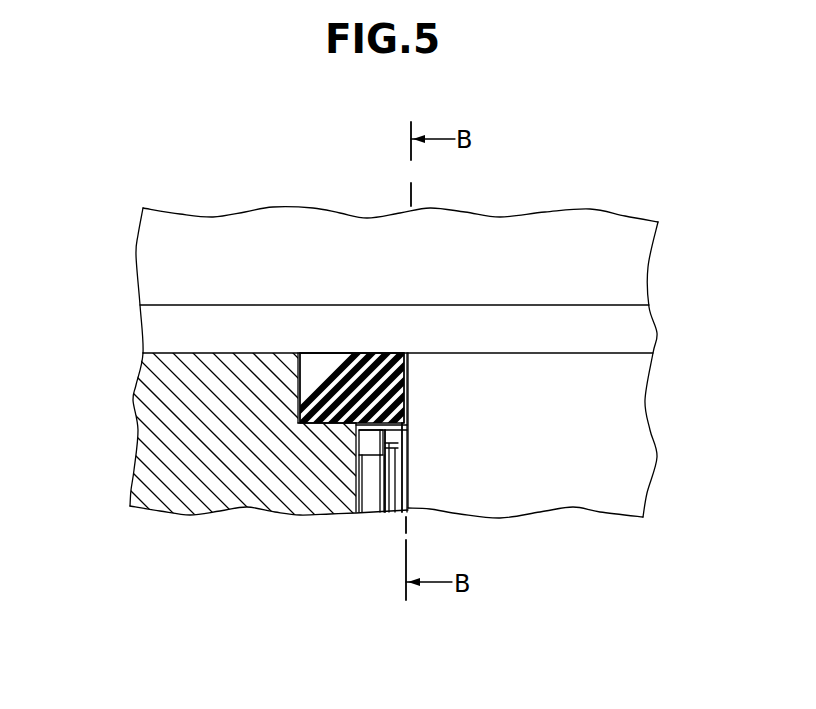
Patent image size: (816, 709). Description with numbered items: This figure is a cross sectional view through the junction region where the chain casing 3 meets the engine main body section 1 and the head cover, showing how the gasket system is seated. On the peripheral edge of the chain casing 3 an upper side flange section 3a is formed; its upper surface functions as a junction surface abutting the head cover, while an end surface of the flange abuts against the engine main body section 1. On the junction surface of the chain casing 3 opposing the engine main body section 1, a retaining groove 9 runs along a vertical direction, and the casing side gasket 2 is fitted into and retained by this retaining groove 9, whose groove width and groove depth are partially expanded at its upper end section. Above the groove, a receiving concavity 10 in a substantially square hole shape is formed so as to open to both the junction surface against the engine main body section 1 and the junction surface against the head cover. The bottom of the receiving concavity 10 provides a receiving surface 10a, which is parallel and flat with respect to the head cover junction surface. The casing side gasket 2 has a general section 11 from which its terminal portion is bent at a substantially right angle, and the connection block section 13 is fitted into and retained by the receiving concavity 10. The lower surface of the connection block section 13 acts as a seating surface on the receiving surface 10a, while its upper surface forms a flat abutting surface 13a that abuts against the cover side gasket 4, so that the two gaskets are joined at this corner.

The engine main body section 1 is at (509, 214).
The casing side gasket 2 is at (409, 467).
The chain casing 3 is at (160, 542).
The upper side flange section 3a is at (152, 437).
The cover side gasket 4 is at (153, 340).
The retaining groove 9 is at (362, 497).
The receiving concavity 10 is at (302, 383).
The receiving surface 10a is at (343, 424).
The general section 11 is at (403, 483).
The connection block section 13 is at (370, 383).
The flat abutting surface 13a is at (362, 354).